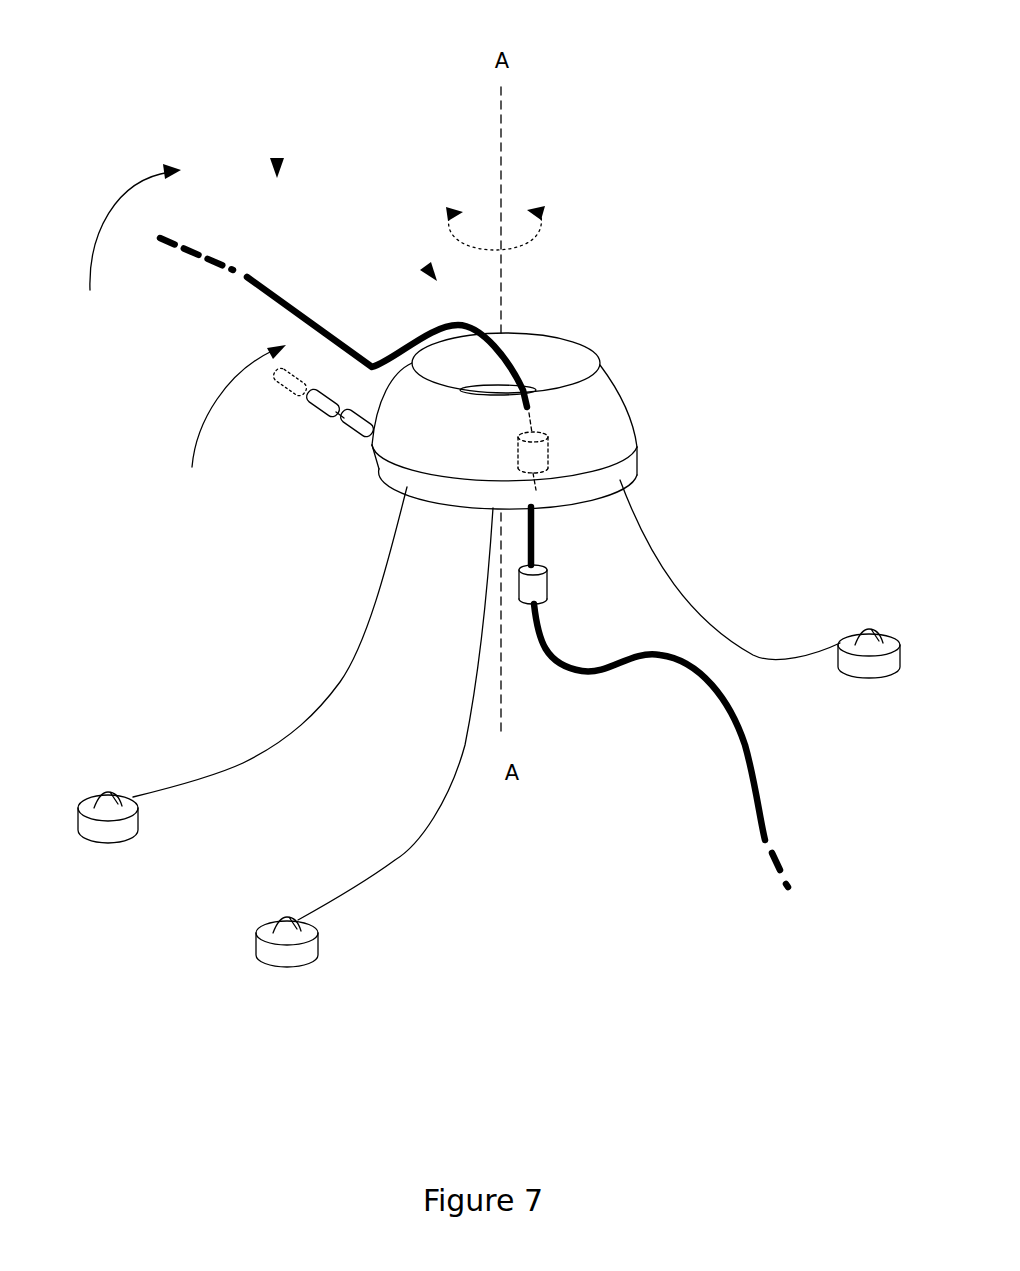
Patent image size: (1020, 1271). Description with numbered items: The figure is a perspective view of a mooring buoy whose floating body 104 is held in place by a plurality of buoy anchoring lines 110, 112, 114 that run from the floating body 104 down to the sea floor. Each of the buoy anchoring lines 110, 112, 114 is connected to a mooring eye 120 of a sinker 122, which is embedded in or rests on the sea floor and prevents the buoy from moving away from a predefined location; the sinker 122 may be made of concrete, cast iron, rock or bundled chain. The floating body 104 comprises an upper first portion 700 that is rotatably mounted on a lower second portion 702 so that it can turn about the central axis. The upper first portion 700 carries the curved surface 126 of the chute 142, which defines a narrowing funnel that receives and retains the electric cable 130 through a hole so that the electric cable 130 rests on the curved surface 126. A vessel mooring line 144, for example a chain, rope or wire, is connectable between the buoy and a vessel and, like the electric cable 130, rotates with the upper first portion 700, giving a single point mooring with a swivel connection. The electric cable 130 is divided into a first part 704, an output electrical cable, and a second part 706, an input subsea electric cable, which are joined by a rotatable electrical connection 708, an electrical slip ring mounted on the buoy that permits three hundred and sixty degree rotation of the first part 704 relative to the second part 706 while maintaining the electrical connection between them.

The electric cable 130 is at (278, 160).
The chute 142 is at (428, 268).
The first part of the electric cable 704 is at (246, 276).
The upper first portion 700 is at (552, 337).
The curved surface 126 is at (601, 358).
The floating body 104 is at (632, 411).
The lower second portion 702 is at (548, 461).
The vessel mooring line 144 is at (315, 415).
The rotatable electrical connection 708 is at (613, 481).
The second part of the electric cable 706 is at (740, 735).
The buoy anchoring line 110 is at (243, 763).
The buoy anchoring line 112 is at (393, 852).
The buoy anchoring line 114 is at (800, 659).
The sinker 122 is at (112, 843).
The mooring eye 120 is at (883, 632).